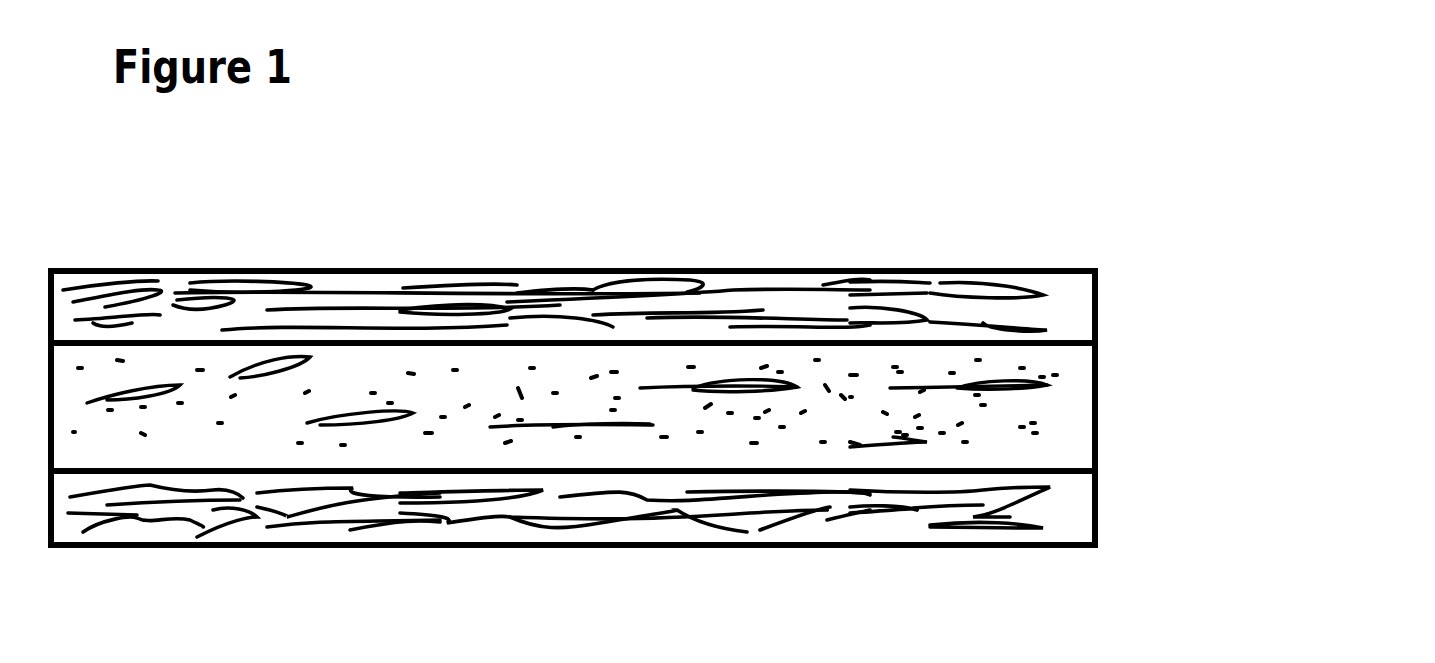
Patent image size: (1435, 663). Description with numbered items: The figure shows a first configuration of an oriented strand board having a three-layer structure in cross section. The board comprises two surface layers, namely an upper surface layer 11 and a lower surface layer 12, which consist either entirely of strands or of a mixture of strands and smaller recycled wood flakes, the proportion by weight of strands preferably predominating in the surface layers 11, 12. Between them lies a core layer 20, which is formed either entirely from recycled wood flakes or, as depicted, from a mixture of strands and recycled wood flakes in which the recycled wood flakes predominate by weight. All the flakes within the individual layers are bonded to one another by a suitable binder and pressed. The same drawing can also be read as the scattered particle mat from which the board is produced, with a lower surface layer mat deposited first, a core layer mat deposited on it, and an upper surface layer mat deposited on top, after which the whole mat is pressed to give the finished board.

The upper surface layer 11 is at (1050, 303).
The core layer 20 is at (1035, 418).
The lower surface layer 12 is at (1066, 508).